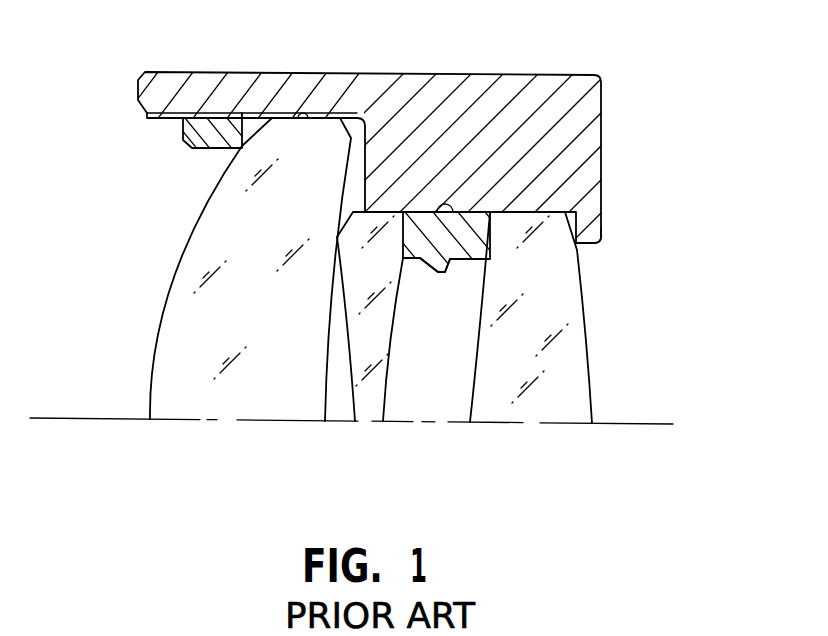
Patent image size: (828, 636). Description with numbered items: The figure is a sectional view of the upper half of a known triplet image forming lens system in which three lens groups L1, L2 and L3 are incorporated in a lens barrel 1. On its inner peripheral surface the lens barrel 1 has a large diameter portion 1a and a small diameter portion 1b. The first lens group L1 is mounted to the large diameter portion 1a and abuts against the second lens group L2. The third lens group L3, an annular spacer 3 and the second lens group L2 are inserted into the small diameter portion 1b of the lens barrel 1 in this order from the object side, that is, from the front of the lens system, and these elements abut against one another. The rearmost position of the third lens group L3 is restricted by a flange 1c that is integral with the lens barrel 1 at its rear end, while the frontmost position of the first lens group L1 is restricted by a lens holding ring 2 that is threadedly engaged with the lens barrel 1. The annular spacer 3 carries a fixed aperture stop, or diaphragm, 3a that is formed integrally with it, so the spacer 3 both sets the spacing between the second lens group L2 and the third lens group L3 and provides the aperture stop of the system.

The lens barrel 1 is at (573, 120).
The large diameter portion 1a is at (300, 112).
The small diameter portion 1b is at (437, 208).
The flange 1c is at (588, 227).
The lens holding ring 2 is at (186, 132).
The annular spacer 3 is at (467, 242).
The fixed aperture stop 3a is at (438, 273).
The first lens group L1 is at (235, 398).
The second lens group L2 is at (368, 398).
The third lens group L3 is at (536, 400).